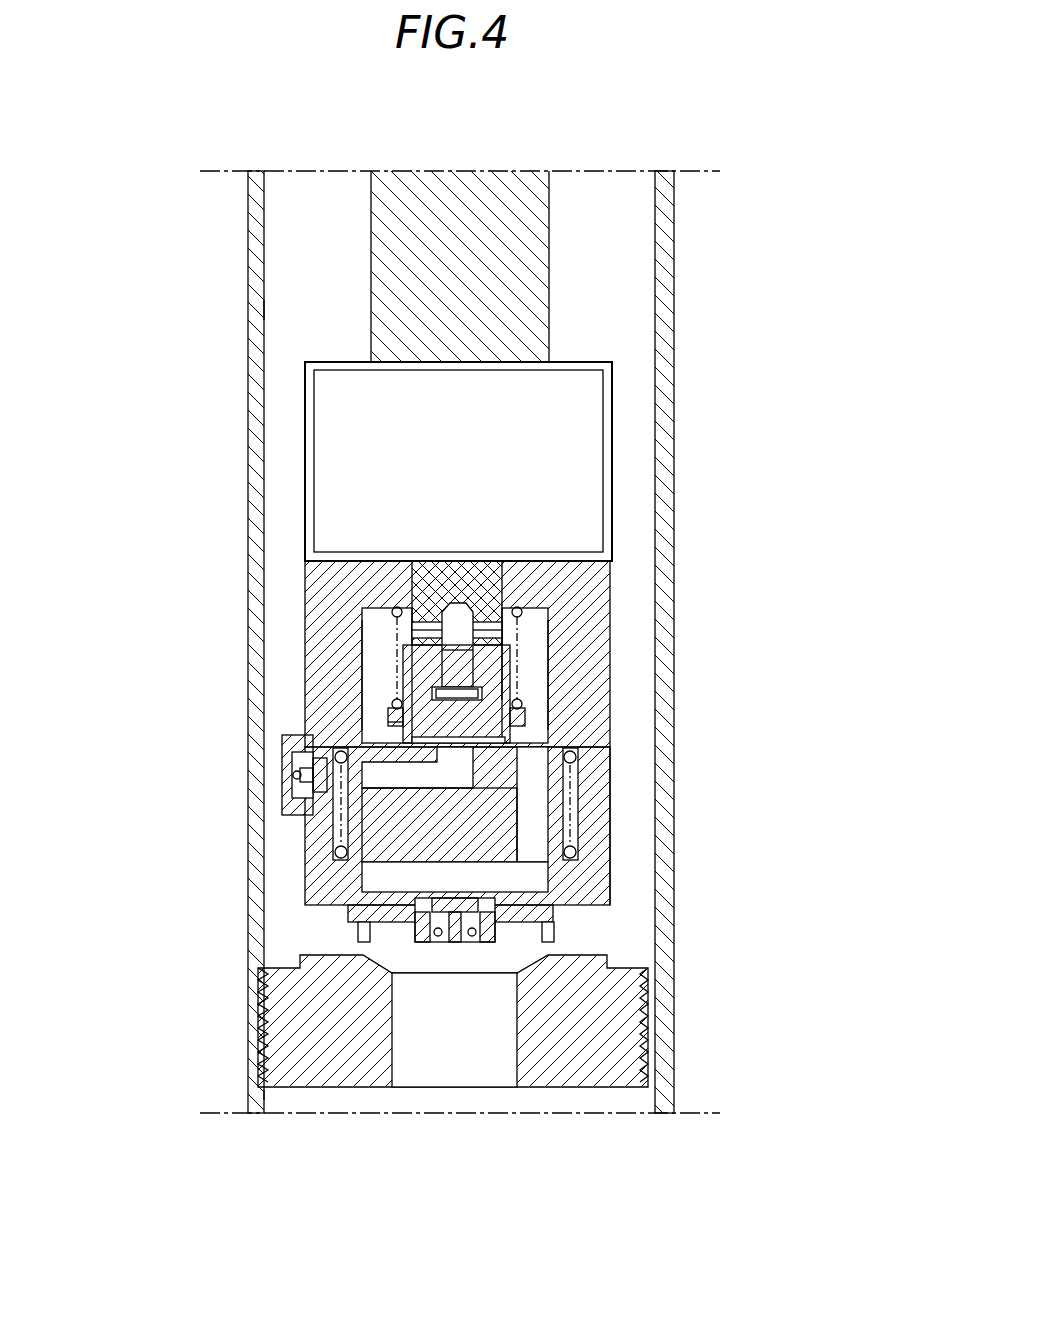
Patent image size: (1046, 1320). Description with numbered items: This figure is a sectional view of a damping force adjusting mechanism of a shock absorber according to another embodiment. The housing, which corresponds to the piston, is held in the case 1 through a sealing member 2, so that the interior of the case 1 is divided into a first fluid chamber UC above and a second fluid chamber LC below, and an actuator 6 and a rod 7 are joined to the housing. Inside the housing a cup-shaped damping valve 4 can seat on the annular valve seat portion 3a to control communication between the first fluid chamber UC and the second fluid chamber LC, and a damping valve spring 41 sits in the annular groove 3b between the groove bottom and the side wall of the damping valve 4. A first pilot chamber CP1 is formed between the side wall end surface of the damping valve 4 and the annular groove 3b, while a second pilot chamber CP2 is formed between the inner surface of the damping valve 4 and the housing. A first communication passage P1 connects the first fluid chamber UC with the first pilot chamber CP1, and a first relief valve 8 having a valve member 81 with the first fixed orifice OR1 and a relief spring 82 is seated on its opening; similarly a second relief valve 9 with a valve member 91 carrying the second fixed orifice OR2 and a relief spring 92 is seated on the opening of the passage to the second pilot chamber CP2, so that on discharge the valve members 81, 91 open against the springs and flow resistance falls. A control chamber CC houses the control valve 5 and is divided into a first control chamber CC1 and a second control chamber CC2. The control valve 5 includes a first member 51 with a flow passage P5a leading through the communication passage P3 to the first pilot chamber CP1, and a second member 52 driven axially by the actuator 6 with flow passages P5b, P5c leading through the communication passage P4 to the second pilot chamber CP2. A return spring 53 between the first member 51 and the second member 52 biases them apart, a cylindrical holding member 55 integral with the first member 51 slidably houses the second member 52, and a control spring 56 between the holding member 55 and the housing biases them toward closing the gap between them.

The case 1 is at (665, 200).
The sealing member 2 is at (640, 1078).
The annular valve seat portion 3a is at (612, 893).
The annular groove 3b is at (575, 800).
The damping valve 4 is at (340, 918).
The damping valve spring 41 is at (340, 860).
The control valve 5 is at (605, 592).
The first member 51 is at (530, 712).
The second member 52 is at (590, 668).
The return spring 53 is at (405, 705).
The cylindrical holding member 55 is at (395, 718).
The control spring 56 is at (425, 628).
The actuator 6 is at (585, 432).
The rod 7 is at (540, 258).
The first relief valve 8 is at (278, 746).
The valve member 81 is at (318, 782).
The relief spring 82 is at (322, 788).
The second relief valve 9 is at (428, 948).
The valve member 91 is at (450, 945).
The relief spring 92 is at (460, 945).
The first fluid chamber UC is at (264, 230).
The second fluid chamber LC is at (268, 1100).
The control chamber CC is at (537, 656).
The first control chamber CC1 is at (400, 690).
The second control chamber CC2 is at (518, 662).
The first pilot chamber CP1 is at (330, 830).
The second pilot chamber CP2 is at (525, 880).
The first communication passage P1 is at (372, 760).
The communication passage P3 is at (388, 730).
The communication passage P4 is at (535, 778).
The flow passage P5a is at (545, 738).
The flow passage P5b is at (415, 675).
The flow passage P5c is at (447, 656).
The first fixed orifice OR1 is at (300, 770).
The second fixed orifice OR2 is at (470, 945).